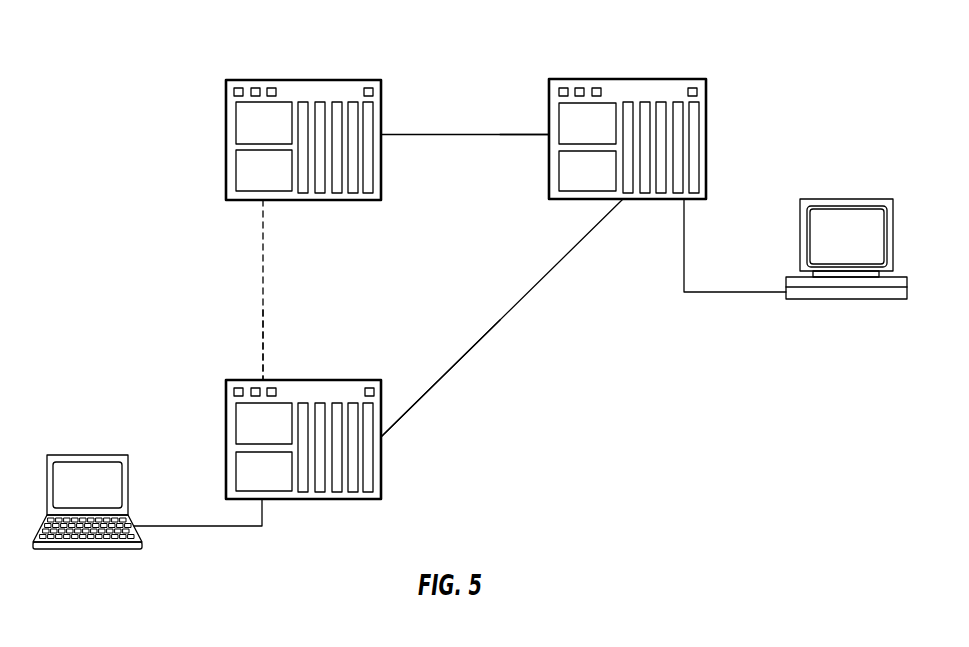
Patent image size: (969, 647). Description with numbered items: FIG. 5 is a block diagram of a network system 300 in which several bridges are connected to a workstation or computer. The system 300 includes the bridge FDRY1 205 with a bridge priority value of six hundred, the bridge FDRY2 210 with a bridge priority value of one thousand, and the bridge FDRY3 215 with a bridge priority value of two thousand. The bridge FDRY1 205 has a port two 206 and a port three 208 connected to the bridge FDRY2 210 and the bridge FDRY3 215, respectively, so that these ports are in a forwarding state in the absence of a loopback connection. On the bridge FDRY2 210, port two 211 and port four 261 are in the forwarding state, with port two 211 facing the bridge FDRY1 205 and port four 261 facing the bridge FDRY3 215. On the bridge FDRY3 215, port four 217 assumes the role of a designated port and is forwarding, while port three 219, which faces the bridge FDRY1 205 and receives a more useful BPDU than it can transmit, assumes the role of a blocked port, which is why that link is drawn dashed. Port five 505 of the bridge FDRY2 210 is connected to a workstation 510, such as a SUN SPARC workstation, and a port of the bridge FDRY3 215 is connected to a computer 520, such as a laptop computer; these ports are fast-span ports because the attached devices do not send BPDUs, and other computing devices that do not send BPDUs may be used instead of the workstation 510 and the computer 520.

The system 300 is at (146, 56).
The bridge FDRY1 205 is at (226, 137).
The port 2 206 is at (381, 136).
The port 3 208 is at (258, 201).
The bridge FDRY2 210 is at (706, 137).
The port 2 211 is at (549, 136).
The port 4 261 is at (625, 200).
The port 5 505 is at (687, 200).
The workstation 510 is at (847, 199).
The bridge FDRY3 215 is at (226, 437).
The port 4 217 is at (383, 437).
The port 3 219 is at (258, 380).
The computer 520 is at (88, 455).